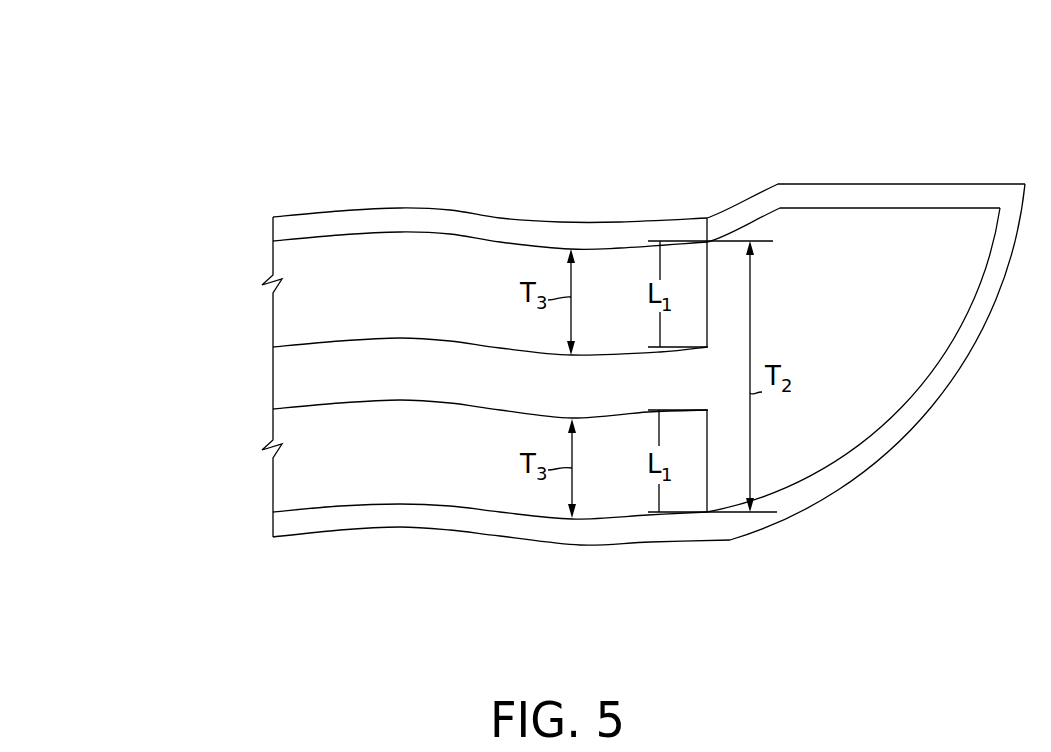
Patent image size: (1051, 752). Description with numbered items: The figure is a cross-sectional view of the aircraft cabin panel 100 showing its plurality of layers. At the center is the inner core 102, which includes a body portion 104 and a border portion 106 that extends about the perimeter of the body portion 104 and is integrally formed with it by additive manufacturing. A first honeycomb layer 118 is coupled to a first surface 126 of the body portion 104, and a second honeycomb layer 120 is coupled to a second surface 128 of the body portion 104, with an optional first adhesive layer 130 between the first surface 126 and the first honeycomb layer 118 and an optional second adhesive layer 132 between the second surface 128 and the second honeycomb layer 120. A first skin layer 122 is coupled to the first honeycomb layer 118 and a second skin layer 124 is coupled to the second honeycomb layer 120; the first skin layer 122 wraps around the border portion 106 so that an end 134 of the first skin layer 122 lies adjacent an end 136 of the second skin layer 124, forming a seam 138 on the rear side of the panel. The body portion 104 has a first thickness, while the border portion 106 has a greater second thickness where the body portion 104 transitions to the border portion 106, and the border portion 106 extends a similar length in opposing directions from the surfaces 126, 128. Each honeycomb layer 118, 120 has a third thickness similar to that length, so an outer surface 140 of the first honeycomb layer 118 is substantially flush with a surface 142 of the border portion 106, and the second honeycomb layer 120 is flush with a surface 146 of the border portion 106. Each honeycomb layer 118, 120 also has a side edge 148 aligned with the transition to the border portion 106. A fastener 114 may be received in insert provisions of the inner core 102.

The aircraft cabin panel 100 is at (110, 119).
The inner core 102 is at (300, 372).
The body portion 104 is at (443, 383).
The border portion 106 is at (890, 335).
The fastener 114 is at (610, 248).
The first honeycomb layer 118 is at (442, 471).
The second honeycomb layer 120 is at (443, 307).
The first skin layer 122 is at (487, 535).
The second skin layer 124 is at (417, 220).
The first surface 126 is at (508, 410).
The second surface 128 is at (582, 355).
The first adhesive layer 130 is at (332, 403).
The second adhesive layer 132 is at (328, 340).
The end of first skin layer 134 is at (718, 223).
The end of second skin layer 136 is at (655, 233).
The seam 138 is at (702, 190).
The outer surface of first honeycomb layer 140 is at (610, 520).
The surface of border portion 142 is at (710, 513).
The surface of border portion 146 is at (727, 237).
The side edge 148 is at (707, 297).